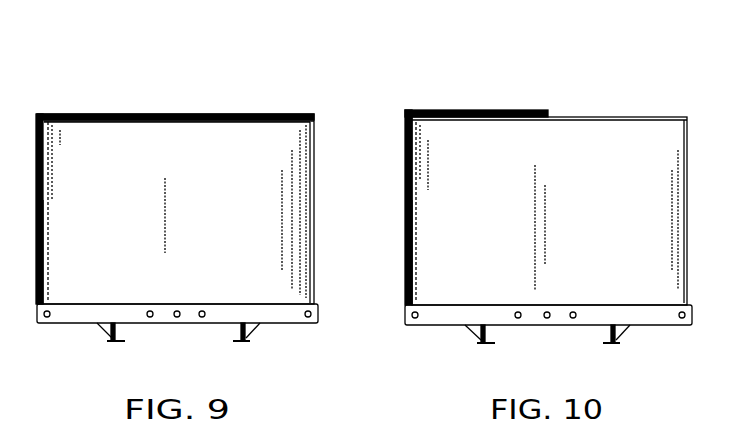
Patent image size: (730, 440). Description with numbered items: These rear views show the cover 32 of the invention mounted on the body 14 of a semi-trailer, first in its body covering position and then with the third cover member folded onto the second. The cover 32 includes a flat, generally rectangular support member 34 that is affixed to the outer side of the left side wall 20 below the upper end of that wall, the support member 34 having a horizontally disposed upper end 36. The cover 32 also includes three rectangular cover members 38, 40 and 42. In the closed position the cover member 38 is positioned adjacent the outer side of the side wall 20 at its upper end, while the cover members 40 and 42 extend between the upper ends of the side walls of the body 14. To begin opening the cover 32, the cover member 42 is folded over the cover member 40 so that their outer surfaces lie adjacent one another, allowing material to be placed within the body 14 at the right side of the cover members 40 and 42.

In FIG. 9, the body 14 is at (330, 132).
In FIG. 10, the body 14 is at (614, 98).
In FIG. 9, the left side wall 20 is at (40, 289).
In FIG. 10, the left side wall 20 is at (412, 282).
In FIG. 9, the cover 32 is at (186, 100).
In FIG. 10, the cover 32 is at (444, 100).
In FIG. 9, the support member 34 is at (35, 230).
In FIG. 10, the support member 34 is at (397, 227).
In FIG. 9, the upper end 36 is at (40, 177).
In FIG. 10, the upper end 36 is at (410, 180).
In FIG. 9, the cover member 38 is at (34, 138).
In FIG. 10, the cover member 38 is at (397, 152).
In FIG. 9, the cover member 40 is at (102, 112).
In FIG. 10, the cover member 40 is at (500, 122).
In FIG. 9, the cover member 42 is at (257, 112).
In FIG. 10, the cover member 42 is at (522, 102).